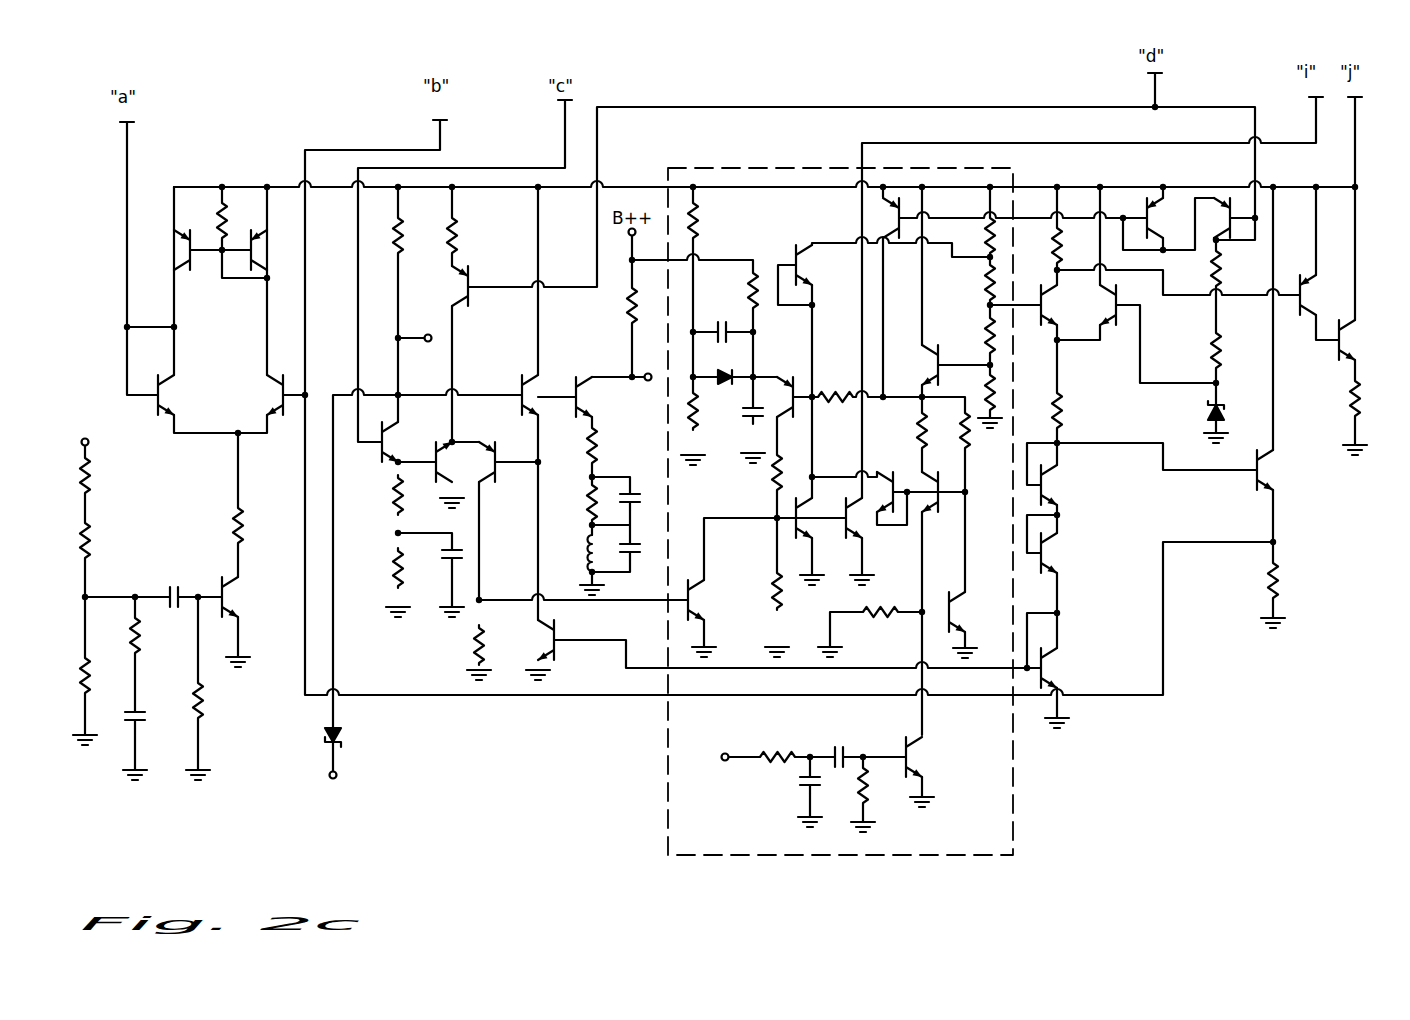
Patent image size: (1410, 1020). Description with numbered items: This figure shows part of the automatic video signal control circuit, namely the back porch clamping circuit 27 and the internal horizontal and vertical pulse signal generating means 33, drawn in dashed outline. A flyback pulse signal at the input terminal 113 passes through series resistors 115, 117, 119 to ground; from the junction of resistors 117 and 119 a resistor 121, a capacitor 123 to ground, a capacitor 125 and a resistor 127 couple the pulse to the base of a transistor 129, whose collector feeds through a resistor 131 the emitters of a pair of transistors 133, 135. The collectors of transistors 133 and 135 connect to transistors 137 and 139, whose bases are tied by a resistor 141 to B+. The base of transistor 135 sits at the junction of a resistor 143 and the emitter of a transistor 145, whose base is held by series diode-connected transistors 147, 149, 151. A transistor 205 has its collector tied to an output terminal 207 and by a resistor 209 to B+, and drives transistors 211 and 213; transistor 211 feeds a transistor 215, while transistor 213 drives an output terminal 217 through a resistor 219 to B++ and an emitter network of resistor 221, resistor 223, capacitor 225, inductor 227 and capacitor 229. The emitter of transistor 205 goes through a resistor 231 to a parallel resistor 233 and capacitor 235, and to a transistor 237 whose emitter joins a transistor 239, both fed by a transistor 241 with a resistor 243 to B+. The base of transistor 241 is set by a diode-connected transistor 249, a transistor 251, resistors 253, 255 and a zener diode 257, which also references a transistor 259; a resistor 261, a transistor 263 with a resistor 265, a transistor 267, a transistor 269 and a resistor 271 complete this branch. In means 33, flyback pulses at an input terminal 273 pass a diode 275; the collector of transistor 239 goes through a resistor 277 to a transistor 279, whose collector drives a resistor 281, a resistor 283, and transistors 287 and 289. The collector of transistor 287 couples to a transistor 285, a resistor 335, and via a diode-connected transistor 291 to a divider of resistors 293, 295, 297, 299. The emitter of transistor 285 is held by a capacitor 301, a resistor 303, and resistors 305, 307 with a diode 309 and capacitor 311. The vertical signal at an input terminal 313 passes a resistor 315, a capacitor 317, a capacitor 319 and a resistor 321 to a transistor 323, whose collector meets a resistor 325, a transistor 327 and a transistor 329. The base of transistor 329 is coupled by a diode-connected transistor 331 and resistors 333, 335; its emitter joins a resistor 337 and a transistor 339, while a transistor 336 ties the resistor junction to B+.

The back porch clamping circuit 27 is at (250, 152).
The internal horizontal and vertical pulse signal generating means 33 is at (730, 167).
The input terminal 113 is at (84, 440).
The resistor 115 is at (90, 478).
The resistor 117 is at (90, 542).
The resistor 119 is at (82, 672).
The resistor 121 is at (139, 642).
The capacitor 123 is at (150, 712).
The capacitor 125 is at (170, 588).
The resistor 127 is at (202, 706).
The transistor 129 is at (240, 598).
The resistor 131 is at (243, 518).
The transistor 133 is at (176, 396).
The transistor 135 is at (266, 396).
The transistor 137 is at (171, 250).
The transistor 139 is at (268, 250).
The resistor 141 is at (226, 222).
The resistor 143 is at (1268, 584).
The transistor 145 is at (1275, 471).
The diode-connected transistor 147 is at (1060, 486).
The diode-connected transistor 149 is at (1060, 554).
The diode-connected transistor 151 is at (1060, 669).
The transistor 205 is at (401, 443).
The output terminal 207 is at (436, 342).
The resistor 209 is at (398, 250).
The transistor 211 is at (516, 380).
The transistor 213 is at (594, 398).
The transistor 215 is at (534, 641).
The output terminal 217 is at (648, 373).
The resistor 219 is at (628, 310).
The resistor 221 is at (598, 444).
The resistor 223 is at (588, 504).
The capacitor 225 is at (636, 486).
The inductor 227 is at (588, 553).
The capacitor 229 is at (634, 562).
The resistor 231 is at (394, 500).
The resistor 233 is at (394, 566).
The capacitor 235 is at (448, 572).
The transistor 237 is at (452, 460).
The transistor 239 is at (504, 446).
The transistor 241 is at (451, 286).
The resistor 243 is at (458, 231).
The transistor 249 is at (1215, 218).
The transistor 251 is at (1163, 218).
The resistor 253 is at (1221, 264).
The resistor 255 is at (1222, 338).
The zener diode 257 is at (1205, 412).
The transistor 259 is at (1118, 328).
The resistor 261 is at (1063, 406).
The transistor 263 is at (1059, 306).
The resistor 265 is at (1054, 244).
The transistor 267 is at (1317, 295).
The transistor 269 is at (1357, 341).
The resistor 271 is at (1350, 400).
The input terminal 273 is at (338, 776).
The diode 275 is at (342, 732).
The resistor 277 is at (474, 644).
The transistor 279 is at (705, 601).
The resistor 281 is at (774, 576).
The resistor 283 is at (770, 482).
The transistor 285 is at (798, 380).
The transistor 287 is at (820, 510).
The transistor 289 is at (856, 519).
The diode-connected transistor 291 is at (816, 266).
The resistor 293 is at (984, 236).
The resistor 295 is at (984, 282).
The resistor 297 is at (986, 330).
The resistor 299 is at (987, 392).
The capacitor 301 is at (748, 416).
The resistor 303 is at (748, 296).
The resistor 305 is at (699, 212).
The resistor 307 is at (688, 412).
The diode 309 is at (724, 388).
The capacitor 311 is at (730, 322).
The input terminal 313 is at (722, 754).
The resistor 315 is at (780, 752).
The capacitor 317 is at (798, 786).
The capacitor 319 is at (846, 750).
The resistor 321 is at (868, 800).
The transistor 323 is at (924, 758).
The resistor 325 is at (864, 616).
The transistor 327 is at (968, 613).
The transistor 329 is at (928, 480).
The diode-connected transistor 331 is at (876, 493).
The resistor 333 is at (970, 452).
The resistor 335 is at (834, 392).
The transistor 336 is at (882, 218).
The resistor 337 is at (918, 432).
The transistor 339 is at (917, 366).